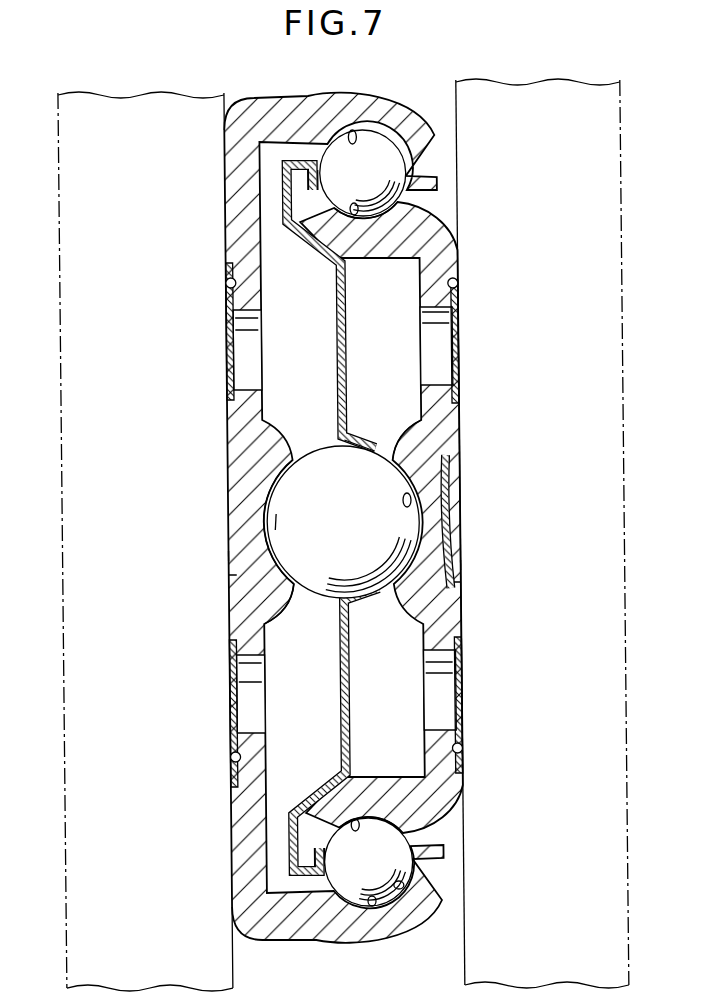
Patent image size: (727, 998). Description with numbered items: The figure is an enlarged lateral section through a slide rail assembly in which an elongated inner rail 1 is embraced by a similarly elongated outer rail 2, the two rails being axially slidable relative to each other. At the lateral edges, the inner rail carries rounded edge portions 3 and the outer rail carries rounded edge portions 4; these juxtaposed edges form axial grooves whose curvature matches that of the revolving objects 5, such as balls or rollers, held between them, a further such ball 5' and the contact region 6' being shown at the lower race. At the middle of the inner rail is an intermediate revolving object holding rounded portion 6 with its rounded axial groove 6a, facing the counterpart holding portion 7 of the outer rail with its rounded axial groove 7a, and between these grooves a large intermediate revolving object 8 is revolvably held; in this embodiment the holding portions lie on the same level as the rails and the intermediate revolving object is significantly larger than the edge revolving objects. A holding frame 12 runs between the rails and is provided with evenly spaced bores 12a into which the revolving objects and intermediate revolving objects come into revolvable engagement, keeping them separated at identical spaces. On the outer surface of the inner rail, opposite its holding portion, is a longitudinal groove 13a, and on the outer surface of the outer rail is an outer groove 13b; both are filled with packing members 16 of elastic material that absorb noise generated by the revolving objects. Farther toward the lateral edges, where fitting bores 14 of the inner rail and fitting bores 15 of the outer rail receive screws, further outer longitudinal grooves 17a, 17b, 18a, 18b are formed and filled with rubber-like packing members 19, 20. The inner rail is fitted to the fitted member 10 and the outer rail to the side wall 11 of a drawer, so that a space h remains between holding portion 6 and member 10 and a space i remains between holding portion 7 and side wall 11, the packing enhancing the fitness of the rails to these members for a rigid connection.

The inner rail 1 is at (460, 263).
The outer rail 2 is at (228, 210).
The rounded edge portion of inner rail 3 is at (373, 252).
The rounded edge portion of outer rail 4 is at (377, 118).
The revolving object 5 is at (367, 514).
The ball contact point 5' is at (327, 782).
The intermediate revolving object holding rounded portion of inner rail 6 is at (383, 329).
The rounded axial groove of inner rail holding portion 6a is at (447, 493).
The ball contact point 6' is at (354, 934).
The intermediate revolving object holding rounded portion of outer rail 7 is at (253, 490).
The rounded axial groove of outer rail holding portion 7a is at (275, 521).
The intermediate revolving object 8 is at (447, 539).
The fitted member 10 is at (613, 479).
The side wall of drawer 11 is at (82, 447).
The holding frame 12 is at (338, 378).
The bore of holding frame 12a is at (327, 158).
The longitudinal groove of inner rail 13a is at (401, 436).
The outer groove of outer rail 13b is at (285, 582).
The fitting bore of inner rail 14 is at (440, 357).
The fitting bore of outer rail 15 is at (245, 360).
The packing member 16 is at (232, 579).
The outer longitudinal groove 17a is at (460, 282).
The outer longitudinal groove 17b is at (229, 282).
The outer longitudinal groove 18a is at (458, 751).
The outer longitudinal groove 18b is at (231, 760).
The packing member 19 is at (232, 325).
The packing member 20 is at (233, 668).
The space h is at (460, 565).
The space i is at (228, 556).